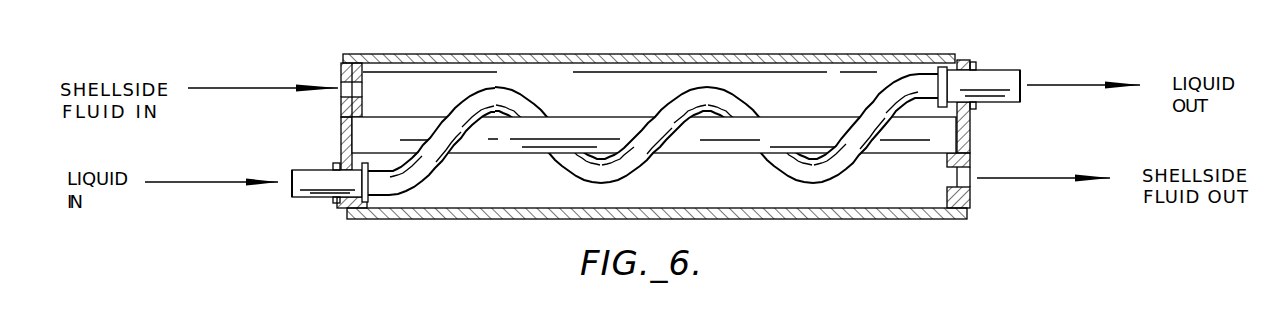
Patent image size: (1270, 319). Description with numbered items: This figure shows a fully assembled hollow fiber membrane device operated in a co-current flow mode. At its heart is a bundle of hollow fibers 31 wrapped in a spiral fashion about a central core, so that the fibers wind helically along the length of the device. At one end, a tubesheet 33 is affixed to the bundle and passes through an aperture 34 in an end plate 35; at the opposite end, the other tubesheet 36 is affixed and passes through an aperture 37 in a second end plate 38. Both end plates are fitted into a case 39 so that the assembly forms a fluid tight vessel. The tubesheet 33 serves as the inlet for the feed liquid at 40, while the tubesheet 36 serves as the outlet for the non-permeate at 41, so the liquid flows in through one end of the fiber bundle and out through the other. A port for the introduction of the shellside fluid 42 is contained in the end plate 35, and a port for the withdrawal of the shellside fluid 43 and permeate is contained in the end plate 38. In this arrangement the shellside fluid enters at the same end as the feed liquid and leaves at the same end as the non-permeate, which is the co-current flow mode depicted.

The bundle of hollow fibers 31 is at (643, 163).
The tubesheet 33 is at (302, 198).
The aperture 34 is at (330, 201).
The end plate 35 is at (340, 129).
The tubesheet 36 is at (997, 70).
The aperture 37 is at (974, 64).
The end plate 38 is at (972, 145).
The case 39 is at (482, 220).
The feed liquid inlet 40 is at (287, 199).
The non-permeate outlet 41 is at (1027, 80).
The shellside fluid introduction port 42 is at (335, 77).
The shellside fluid withdrawal port 43 is at (973, 188).